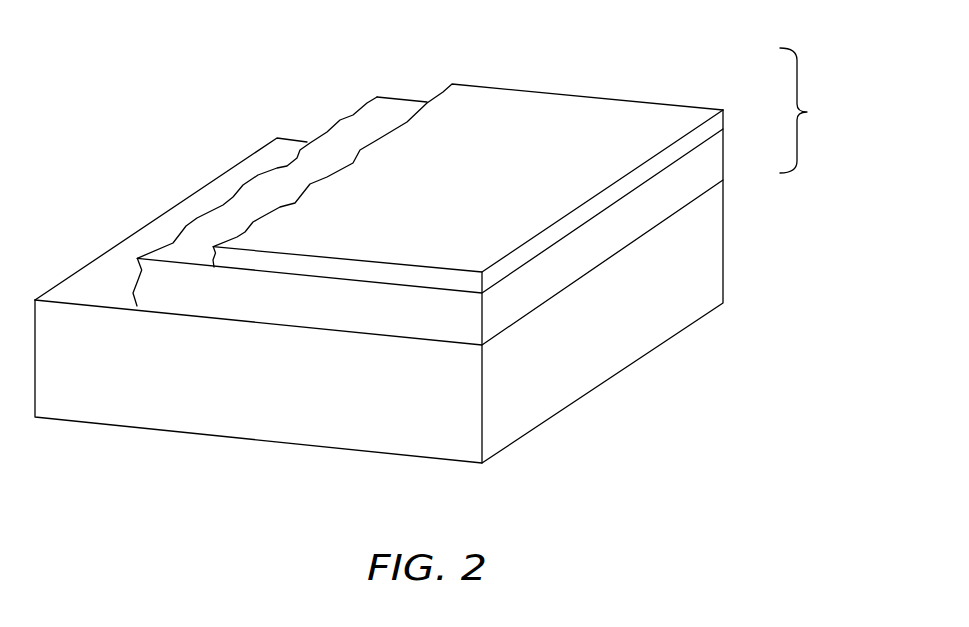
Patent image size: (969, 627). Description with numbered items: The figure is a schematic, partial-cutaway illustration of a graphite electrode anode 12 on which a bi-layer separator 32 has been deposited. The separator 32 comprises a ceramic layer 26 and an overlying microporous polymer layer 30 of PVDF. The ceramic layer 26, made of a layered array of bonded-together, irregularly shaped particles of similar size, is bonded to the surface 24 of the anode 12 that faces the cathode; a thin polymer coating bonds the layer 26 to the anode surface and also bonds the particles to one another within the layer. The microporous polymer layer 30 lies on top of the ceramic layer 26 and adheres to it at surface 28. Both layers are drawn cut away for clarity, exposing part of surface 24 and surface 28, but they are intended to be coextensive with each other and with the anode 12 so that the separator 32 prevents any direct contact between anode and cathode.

The anode 12 is at (187, 438).
The surface of anode 24 is at (115, 275).
The ceramic layer 26 is at (717, 162).
The surface 28 is at (347, 130).
The microporous polymer layer 30 is at (717, 125).
The bi-layer separator 32 is at (808, 112).